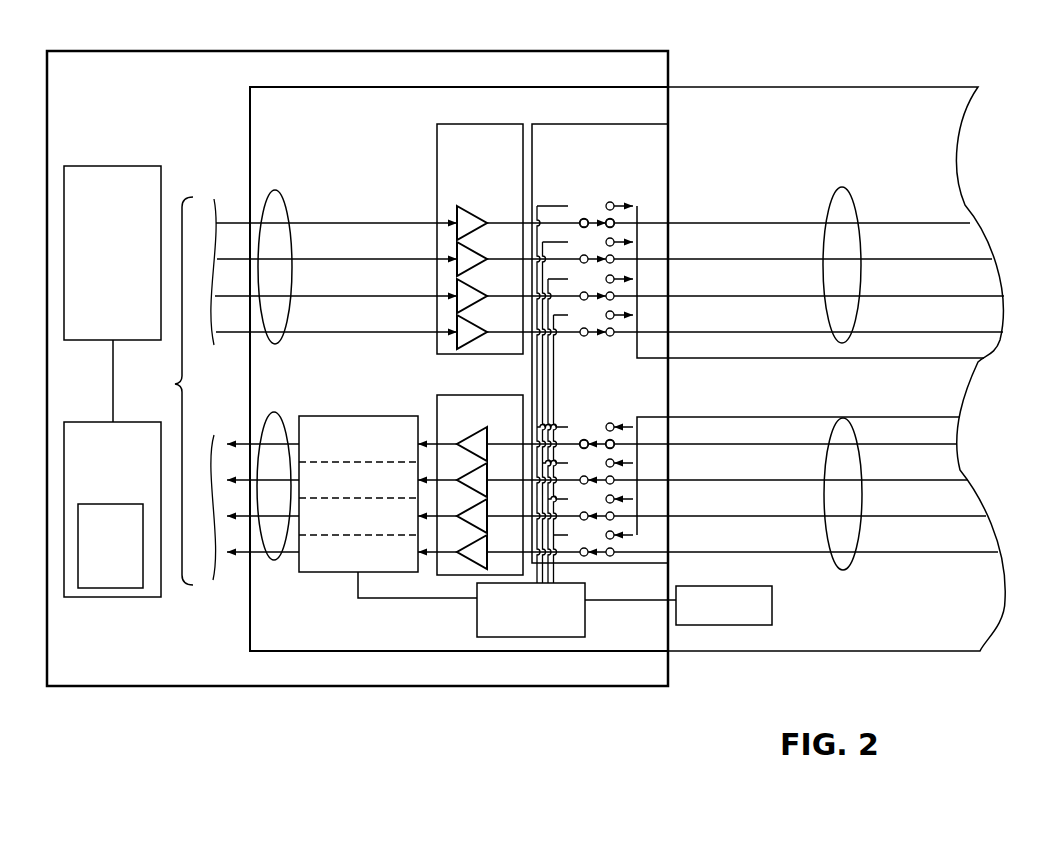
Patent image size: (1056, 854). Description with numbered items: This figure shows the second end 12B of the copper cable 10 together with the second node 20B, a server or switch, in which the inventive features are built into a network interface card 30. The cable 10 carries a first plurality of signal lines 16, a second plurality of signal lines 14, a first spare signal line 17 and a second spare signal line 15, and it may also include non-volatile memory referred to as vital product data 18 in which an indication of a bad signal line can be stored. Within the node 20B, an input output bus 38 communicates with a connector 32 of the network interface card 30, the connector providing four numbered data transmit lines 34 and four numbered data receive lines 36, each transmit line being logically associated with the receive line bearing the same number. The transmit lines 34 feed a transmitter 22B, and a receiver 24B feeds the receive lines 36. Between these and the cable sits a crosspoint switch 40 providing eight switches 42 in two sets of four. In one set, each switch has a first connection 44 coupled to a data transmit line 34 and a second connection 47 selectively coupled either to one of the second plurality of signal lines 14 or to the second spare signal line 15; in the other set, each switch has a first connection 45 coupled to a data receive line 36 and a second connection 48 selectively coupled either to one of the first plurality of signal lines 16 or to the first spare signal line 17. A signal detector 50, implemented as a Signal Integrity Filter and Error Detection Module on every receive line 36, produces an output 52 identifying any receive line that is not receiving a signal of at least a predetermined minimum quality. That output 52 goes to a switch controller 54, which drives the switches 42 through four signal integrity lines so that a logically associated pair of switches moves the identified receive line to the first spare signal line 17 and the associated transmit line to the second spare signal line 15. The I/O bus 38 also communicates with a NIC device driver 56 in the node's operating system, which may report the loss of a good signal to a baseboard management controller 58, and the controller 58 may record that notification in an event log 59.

The cable 10 is at (852, 66).
The second end 12B is at (728, 87).
The second plurality of signal lines 14 is at (850, 190).
The second spare signal line 15 is at (970, 357).
The first plurality of signal lines 16 is at (855, 570).
The first spare signal line 17 is at (935, 417).
The vital product data 18 is at (772, 603).
The second node 20B is at (152, 51).
The transmitter 22B is at (437, 201).
The receiver 24B is at (437, 397).
The network interface card 30 is at (562, 87).
The connector 32 is at (250, 122).
The data transmit lines 34 is at (283, 189).
The data receive lines 36 is at (277, 560).
The input output bus 38 is at (186, 391).
The crosspoint switch 40 is at (640, 124).
The switches 42 is at (640, 205).
The first connection 44 is at (592, 229).
The first connection 45 is at (592, 452).
The second connection 47 is at (596, 221).
The second connection 48 is at (596, 441).
The signal detector 50 is at (300, 416).
The output 52 is at (413, 600).
The switch controller 54 is at (588, 601).
The NIC device driver 56 is at (80, 165).
The baseboard management controller 58 is at (85, 422).
The event log 59 is at (92, 504).